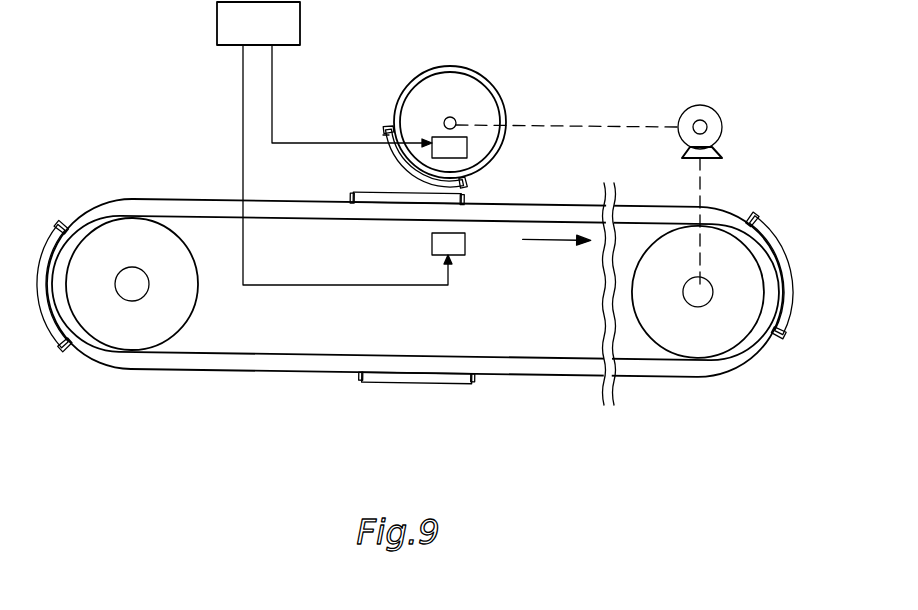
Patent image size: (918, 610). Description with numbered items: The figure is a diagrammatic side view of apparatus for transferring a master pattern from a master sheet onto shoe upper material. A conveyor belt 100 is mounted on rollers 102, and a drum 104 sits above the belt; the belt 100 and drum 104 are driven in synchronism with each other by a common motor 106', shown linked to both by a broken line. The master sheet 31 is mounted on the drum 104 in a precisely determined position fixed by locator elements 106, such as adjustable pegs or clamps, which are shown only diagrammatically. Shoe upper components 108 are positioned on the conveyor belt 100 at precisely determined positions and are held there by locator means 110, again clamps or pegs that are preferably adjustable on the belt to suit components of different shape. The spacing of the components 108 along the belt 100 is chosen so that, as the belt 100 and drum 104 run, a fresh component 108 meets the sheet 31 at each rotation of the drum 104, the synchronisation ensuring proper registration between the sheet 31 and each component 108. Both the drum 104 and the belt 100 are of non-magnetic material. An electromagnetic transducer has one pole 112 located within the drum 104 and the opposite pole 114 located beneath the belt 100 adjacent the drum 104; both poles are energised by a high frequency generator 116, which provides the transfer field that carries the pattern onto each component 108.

The conveyor belt 100 is at (285, 354).
The rollers 102 is at (176, 312).
The drum 104 is at (463, 66).
The locator elements 106 is at (443, 137).
The common motor 106' is at (606, 181).
The shoe upper components 108 is at (47, 250).
The locator means 110 is at (62, 226).
The pole 112 is at (467, 144).
The opposite pole 114 is at (432, 245).
The high frequency generator 116 is at (300, 16).
The master sheet 31 is at (382, 137).